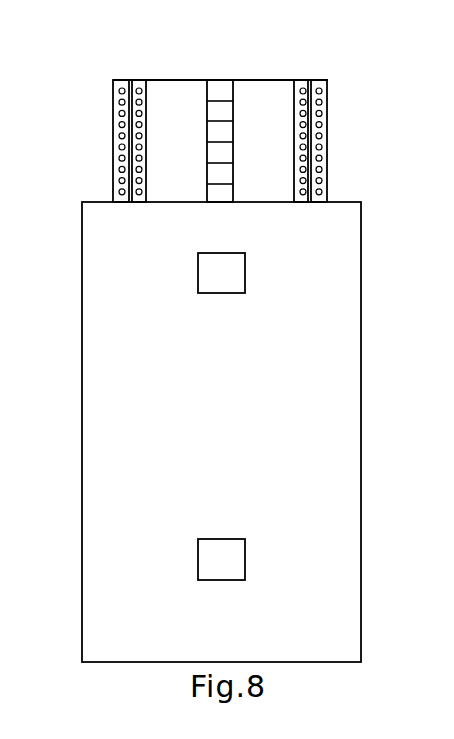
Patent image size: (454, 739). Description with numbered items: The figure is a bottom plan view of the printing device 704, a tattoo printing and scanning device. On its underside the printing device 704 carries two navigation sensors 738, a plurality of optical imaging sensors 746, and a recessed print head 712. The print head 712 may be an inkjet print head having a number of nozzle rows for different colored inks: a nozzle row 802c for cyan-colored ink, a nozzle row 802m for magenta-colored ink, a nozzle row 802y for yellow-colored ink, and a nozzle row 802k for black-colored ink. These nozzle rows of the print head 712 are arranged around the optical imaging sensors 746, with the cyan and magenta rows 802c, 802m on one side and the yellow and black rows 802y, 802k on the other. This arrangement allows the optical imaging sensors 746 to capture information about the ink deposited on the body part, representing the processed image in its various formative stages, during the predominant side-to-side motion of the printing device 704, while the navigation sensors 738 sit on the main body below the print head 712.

The printing device 704 is at (80, 50).
The print head 712 is at (368, 143).
The nozzle row for cyan-colored ink 802c is at (113, 93).
The nozzle row for magenta-colored ink 802m is at (139, 80).
The optical imaging sensors 746 is at (223, 80).
The nozzle row for yellow-colored ink 802y is at (305, 80).
The nozzle row for black-colored ink 802k is at (328, 81).
The navigation sensors 738 is at (245, 272).